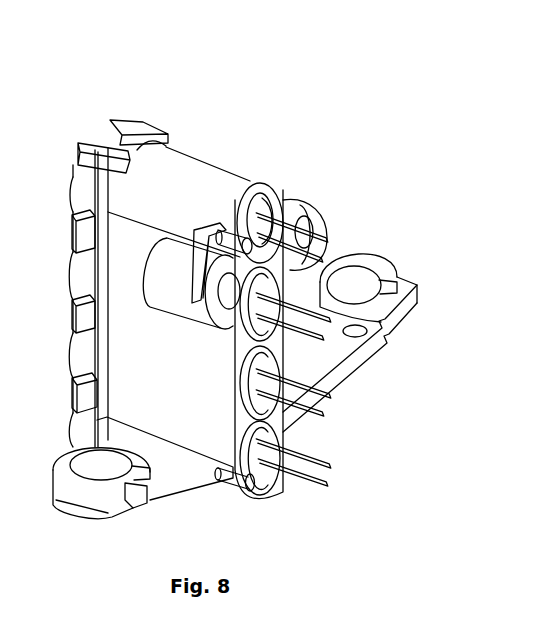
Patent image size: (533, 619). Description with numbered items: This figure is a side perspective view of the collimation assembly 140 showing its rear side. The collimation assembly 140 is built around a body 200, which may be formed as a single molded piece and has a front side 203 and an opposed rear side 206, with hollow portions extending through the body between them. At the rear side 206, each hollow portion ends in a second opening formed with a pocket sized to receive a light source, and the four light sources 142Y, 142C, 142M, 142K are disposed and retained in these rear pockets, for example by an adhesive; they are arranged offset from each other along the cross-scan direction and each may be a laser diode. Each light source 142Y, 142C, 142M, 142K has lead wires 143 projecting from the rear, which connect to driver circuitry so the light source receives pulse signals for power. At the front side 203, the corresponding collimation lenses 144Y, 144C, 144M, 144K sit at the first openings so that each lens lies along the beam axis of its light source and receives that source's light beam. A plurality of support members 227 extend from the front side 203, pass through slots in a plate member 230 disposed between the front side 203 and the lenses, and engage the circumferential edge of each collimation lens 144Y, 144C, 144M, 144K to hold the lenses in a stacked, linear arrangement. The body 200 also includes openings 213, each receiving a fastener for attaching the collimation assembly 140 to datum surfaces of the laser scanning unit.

The collimation assembly 140 is at (323, 132).
The body 200 is at (246, 177).
The front side 203 is at (98, 288).
The rear side 206 is at (238, 432).
The openings 213 is at (363, 260).
The support members 227 is at (116, 120).
The plate member 230 is at (100, 388).
The light source 142Y is at (273, 203).
The light source 142C is at (352, 372).
The light source 142M is at (295, 421).
The light source 142K is at (267, 489).
The lead wires 143 is at (330, 241).
The collimation lens 144Y is at (75, 177).
The collimation lens 144C is at (75, 263).
The collimation lens 144M is at (74, 349).
The collimation lens 144K is at (78, 433).